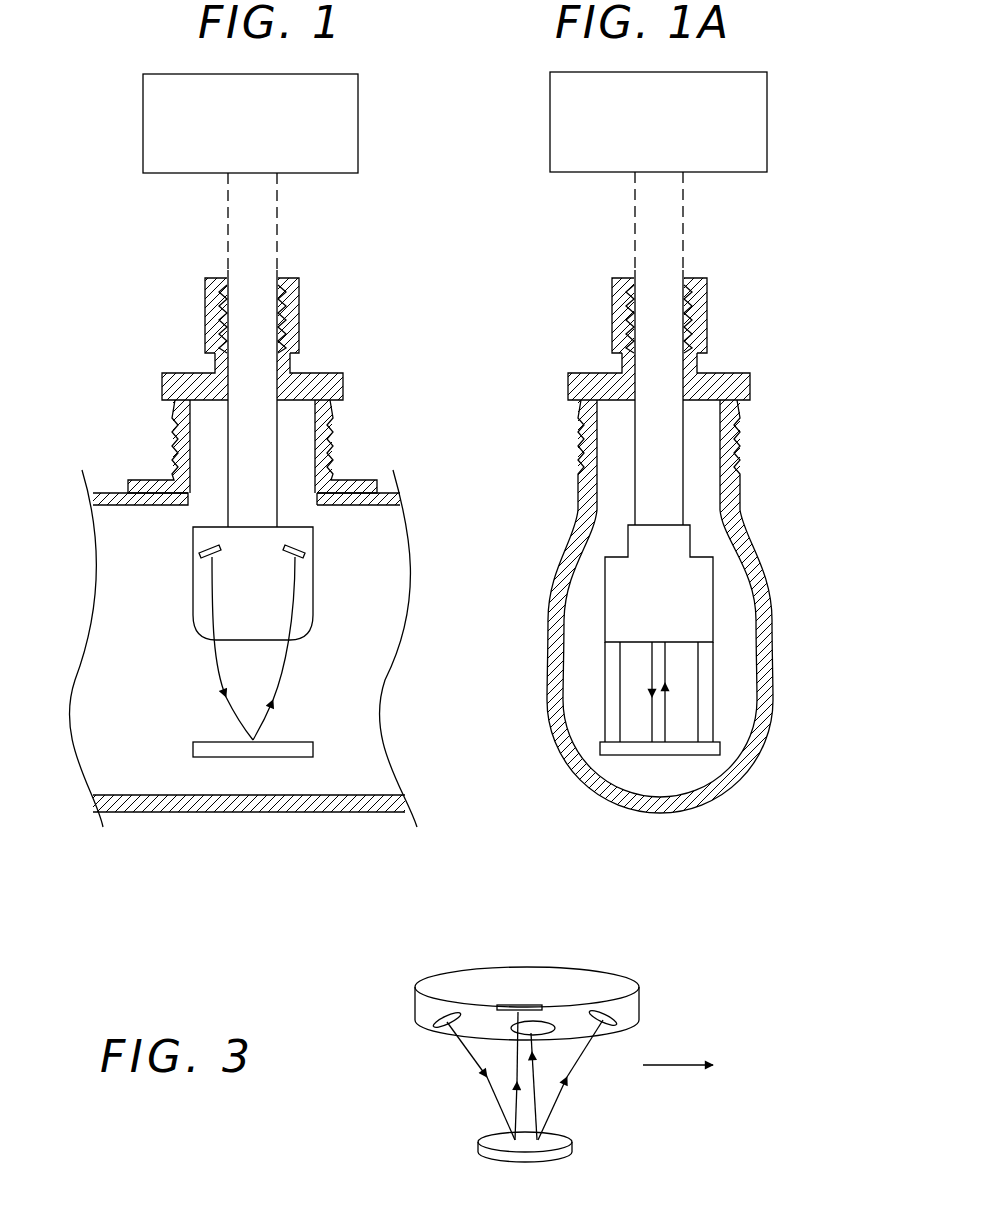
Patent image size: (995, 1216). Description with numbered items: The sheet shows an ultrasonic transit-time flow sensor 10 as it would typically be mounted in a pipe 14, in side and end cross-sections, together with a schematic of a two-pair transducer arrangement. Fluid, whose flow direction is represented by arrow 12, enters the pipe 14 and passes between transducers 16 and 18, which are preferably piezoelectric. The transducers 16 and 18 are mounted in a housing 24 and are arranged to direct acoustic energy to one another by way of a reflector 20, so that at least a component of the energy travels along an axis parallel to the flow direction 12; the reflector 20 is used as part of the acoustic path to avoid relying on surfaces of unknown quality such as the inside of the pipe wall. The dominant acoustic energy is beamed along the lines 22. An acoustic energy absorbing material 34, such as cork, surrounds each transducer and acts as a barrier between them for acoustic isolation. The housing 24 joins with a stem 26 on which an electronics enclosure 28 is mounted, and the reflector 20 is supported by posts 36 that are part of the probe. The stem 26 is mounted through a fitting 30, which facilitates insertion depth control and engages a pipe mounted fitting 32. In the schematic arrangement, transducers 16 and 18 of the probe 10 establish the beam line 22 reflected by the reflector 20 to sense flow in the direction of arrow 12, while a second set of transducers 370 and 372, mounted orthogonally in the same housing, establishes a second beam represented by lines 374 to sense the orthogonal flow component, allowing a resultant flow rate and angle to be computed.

In FIG. 1, the flow sensor 10 is at (150, 295).
In FIG. 1A, the flow sensor 10 is at (757, 300).
In FIG. 1, the flow direction arrow 12 is at (187, 692).
In FIG. 3, the flow direction arrow 12 is at (442, 1075).
In FIG. 1, the pipe 14 is at (287, 812).
In FIG. 1A, the pipe 14 is at (717, 797).
In FIG. 1, the transducer 16 is at (200, 550).
In FIG. 3, the transducer 16 is at (415, 1018).
In FIG. 1, the transducer 18 is at (305, 552).
In FIG. 3, the transducer 18 is at (615, 1020).
In FIG. 1, the reflector 20 is at (313, 747).
In FIG. 1A, the reflector 20 is at (720, 745).
In FIG. 3, the reflector 20 is at (573, 1138).
In FIG. 1, the acoustic energy beam lines 22 is at (258, 722).
In FIG. 1A, the acoustic energy beam lines 22 is at (648, 718).
In FIG. 3, the acoustic energy beam lines 22 is at (523, 1100).
In FIG. 1, the housing 24 is at (313, 537).
In FIG. 1A, the housing 24 is at (692, 543).
In FIG. 3, the housing 24 is at (638, 995).
In FIG. 1, the stem 26 is at (280, 216).
In FIG. 1A, the stem 26 is at (635, 245).
In FIG. 1, the electronics enclosure 28 is at (358, 128).
In FIG. 1A, the electronics enclosure 28 is at (550, 138).
In FIG. 1, the fitting 30 is at (343, 378).
In FIG. 1A, the fitting 30 is at (568, 375).
In FIG. 1, the pipe mounted fitting 32 is at (357, 480).
In FIG. 1A, the pipe mounted fitting 32 is at (580, 495).
In FIG. 1, the acoustic energy absorbing material 34 is at (230, 535).
In FIG. 1A, the posts 36 is at (603, 662).
In FIG. 3, the transducer 370 is at (500, 1005).
In FIG. 3, the transducer 372 is at (557, 1026).
In FIG. 3, the second acoustic energy beam lines 374 is at (553, 1104).